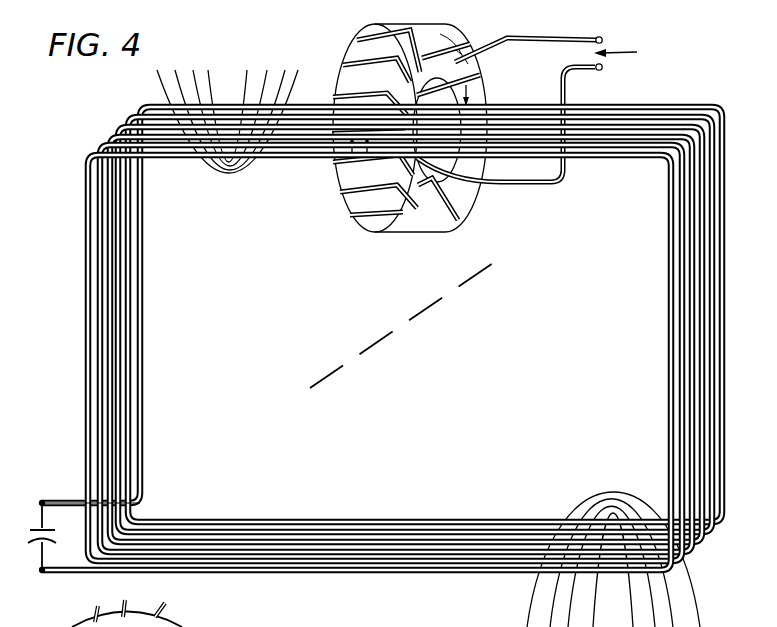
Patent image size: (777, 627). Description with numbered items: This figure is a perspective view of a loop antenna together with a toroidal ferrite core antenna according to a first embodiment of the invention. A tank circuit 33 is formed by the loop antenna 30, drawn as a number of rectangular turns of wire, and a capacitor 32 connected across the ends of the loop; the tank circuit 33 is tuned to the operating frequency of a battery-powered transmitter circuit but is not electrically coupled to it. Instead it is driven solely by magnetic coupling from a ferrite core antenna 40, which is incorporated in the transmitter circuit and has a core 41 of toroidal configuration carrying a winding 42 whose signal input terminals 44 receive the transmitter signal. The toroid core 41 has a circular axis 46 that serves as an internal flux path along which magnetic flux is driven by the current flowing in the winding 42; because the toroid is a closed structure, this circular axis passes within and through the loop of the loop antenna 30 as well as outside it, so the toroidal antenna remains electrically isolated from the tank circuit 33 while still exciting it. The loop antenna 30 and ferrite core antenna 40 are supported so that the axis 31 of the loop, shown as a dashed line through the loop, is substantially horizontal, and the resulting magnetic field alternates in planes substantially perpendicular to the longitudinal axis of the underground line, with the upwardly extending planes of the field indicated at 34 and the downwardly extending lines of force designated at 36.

The loop antenna 30 is at (146, 354).
The axis of the loop 31 is at (352, 355).
The capacitor 32 is at (44, 546).
The tank circuit 33 is at (51, 488).
The upwardly extending planes of the magnetic field 34 is at (210, 167).
The downwardly extending lines of force 36 is at (540, 615).
The ferrite core antenna 40 is at (496, 154).
The core 41 is at (445, 222).
The winding 42 is at (383, 228).
The signal input terminals 44 is at (585, 62).
The circular axis 46 is at (336, 178).